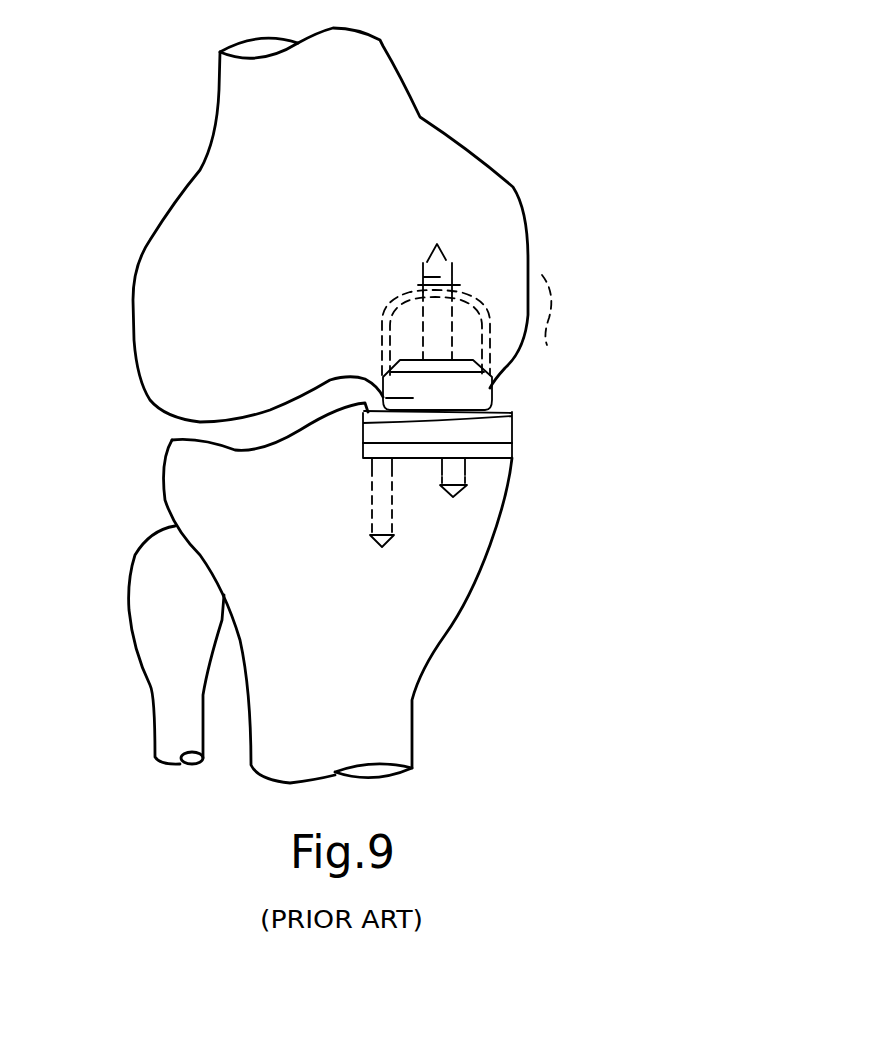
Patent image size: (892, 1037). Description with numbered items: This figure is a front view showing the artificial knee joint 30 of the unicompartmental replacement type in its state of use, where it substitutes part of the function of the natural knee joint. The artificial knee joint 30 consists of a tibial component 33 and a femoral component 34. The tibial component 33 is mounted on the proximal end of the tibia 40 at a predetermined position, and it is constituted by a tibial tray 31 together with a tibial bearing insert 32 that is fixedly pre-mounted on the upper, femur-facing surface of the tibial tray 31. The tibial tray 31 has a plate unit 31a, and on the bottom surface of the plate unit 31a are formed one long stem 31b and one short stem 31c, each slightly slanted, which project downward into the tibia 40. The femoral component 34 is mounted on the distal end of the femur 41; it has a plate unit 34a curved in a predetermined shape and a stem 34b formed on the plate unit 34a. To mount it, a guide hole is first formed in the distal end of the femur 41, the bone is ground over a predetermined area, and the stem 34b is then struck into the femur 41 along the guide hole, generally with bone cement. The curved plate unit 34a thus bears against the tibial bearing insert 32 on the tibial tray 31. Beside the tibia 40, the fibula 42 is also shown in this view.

The artificial knee joint 30 is at (506, 362).
The tibial tray 31 is at (448, 498).
The plate unit 31a is at (387, 451).
The long stem 31b is at (383, 522).
The short stem 31c is at (457, 480).
The tibial bearing insert 32 is at (525, 406).
The tibial component 33 is at (469, 480).
The femoral component 34 is at (460, 290).
The plate unit 34a is at (383, 395).
The stem 34b is at (455, 272).
The tibia 40 is at (382, 676).
The femur 41 is at (228, 131).
The fibula 42 is at (172, 707).